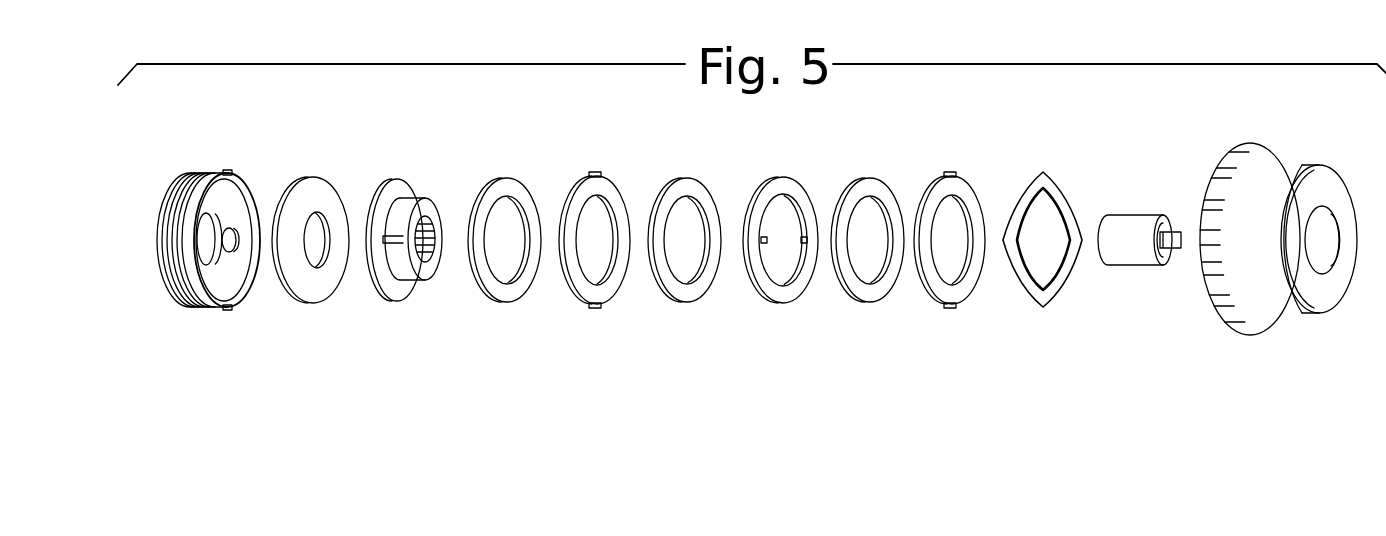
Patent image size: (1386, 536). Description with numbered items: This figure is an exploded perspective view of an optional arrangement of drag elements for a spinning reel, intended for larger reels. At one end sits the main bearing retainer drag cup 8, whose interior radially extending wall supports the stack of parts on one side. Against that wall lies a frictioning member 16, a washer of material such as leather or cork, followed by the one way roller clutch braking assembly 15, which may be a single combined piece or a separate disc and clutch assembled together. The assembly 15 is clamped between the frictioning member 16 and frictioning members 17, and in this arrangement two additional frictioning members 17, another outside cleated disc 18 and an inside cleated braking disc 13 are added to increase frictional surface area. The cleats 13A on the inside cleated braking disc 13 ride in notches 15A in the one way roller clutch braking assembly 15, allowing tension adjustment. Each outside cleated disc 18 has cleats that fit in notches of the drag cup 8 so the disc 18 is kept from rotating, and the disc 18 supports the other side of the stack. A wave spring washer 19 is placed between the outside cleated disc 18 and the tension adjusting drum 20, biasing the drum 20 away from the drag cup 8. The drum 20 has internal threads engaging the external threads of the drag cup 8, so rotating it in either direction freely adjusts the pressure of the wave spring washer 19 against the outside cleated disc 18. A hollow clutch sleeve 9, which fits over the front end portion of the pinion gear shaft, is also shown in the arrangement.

The main bearing retainer drag cup 8 is at (213, 308).
The frictioning member 16 is at (315, 305).
The one way roller clutch braking assembly 15 is at (403, 249).
The notches 15A is at (443, 241).
The frictioning member 17 is at (503, 300).
The outside cleated disc 18 is at (600, 306).
The inside cleated braking disc 13 is at (780, 253).
The cleats 13A is at (803, 237).
The wave spring washer 19 is at (1048, 307).
The hollow clutch sleeve 9 is at (1132, 268).
The tension adjusting drum 20 is at (1258, 336).